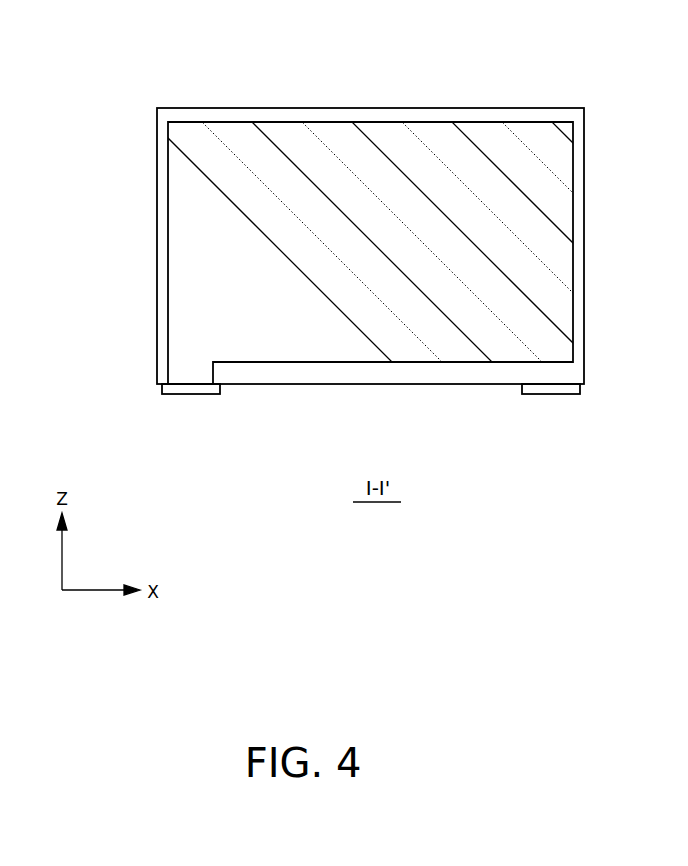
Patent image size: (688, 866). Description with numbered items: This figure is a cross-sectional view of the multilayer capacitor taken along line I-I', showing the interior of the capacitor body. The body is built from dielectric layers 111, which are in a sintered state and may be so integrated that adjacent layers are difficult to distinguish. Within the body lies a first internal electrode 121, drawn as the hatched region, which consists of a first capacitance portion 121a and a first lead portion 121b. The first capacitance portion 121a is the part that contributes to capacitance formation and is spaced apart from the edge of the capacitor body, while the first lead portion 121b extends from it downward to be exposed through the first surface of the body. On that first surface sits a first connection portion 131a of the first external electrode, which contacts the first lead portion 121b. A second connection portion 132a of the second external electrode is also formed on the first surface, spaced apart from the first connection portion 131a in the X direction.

The dielectric layer 111 is at (160, 222).
The first internal electrode 121 is at (198, 60).
The first capacitance portion 121a is at (302, 190).
The first lead portion 121b is at (192, 377).
The first connection portion 131a is at (189, 394).
The second connection portion 132a is at (548, 394).